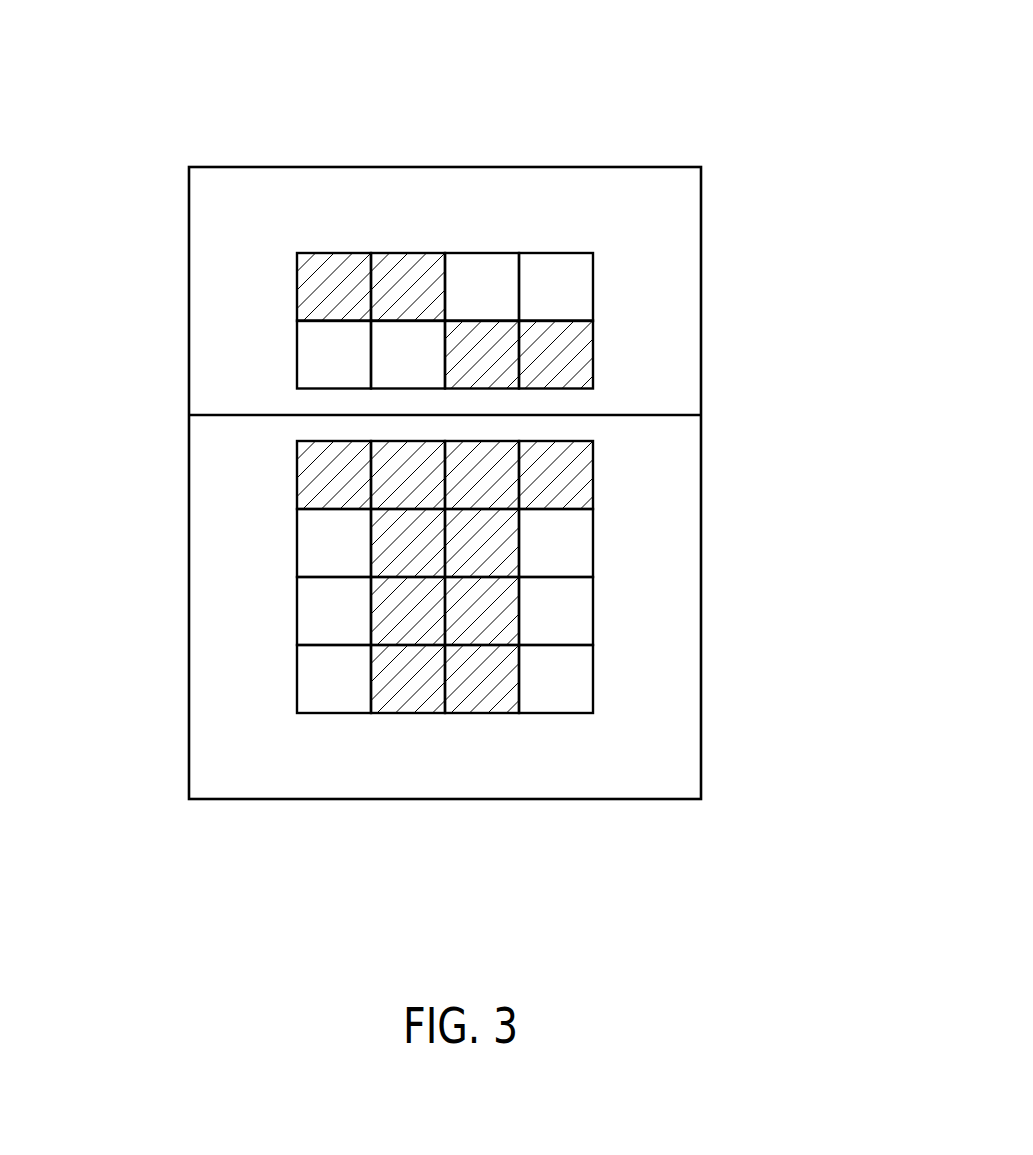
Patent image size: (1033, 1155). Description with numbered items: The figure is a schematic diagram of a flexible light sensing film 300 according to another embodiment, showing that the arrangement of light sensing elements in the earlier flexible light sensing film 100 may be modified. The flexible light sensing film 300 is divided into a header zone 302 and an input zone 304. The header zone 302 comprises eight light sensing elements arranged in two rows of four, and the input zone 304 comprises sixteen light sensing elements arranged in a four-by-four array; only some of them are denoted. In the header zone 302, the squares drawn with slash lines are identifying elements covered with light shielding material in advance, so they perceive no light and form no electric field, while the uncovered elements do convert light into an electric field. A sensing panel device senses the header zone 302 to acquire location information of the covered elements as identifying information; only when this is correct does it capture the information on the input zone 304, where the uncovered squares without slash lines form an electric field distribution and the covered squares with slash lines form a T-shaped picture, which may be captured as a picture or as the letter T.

The flexible light sensing film 300 is at (679, 67).
The flexible light sensing film 100 is at (701, 222).
The header zone 302 is at (229, 166).
The input zone 304 is at (260, 799).